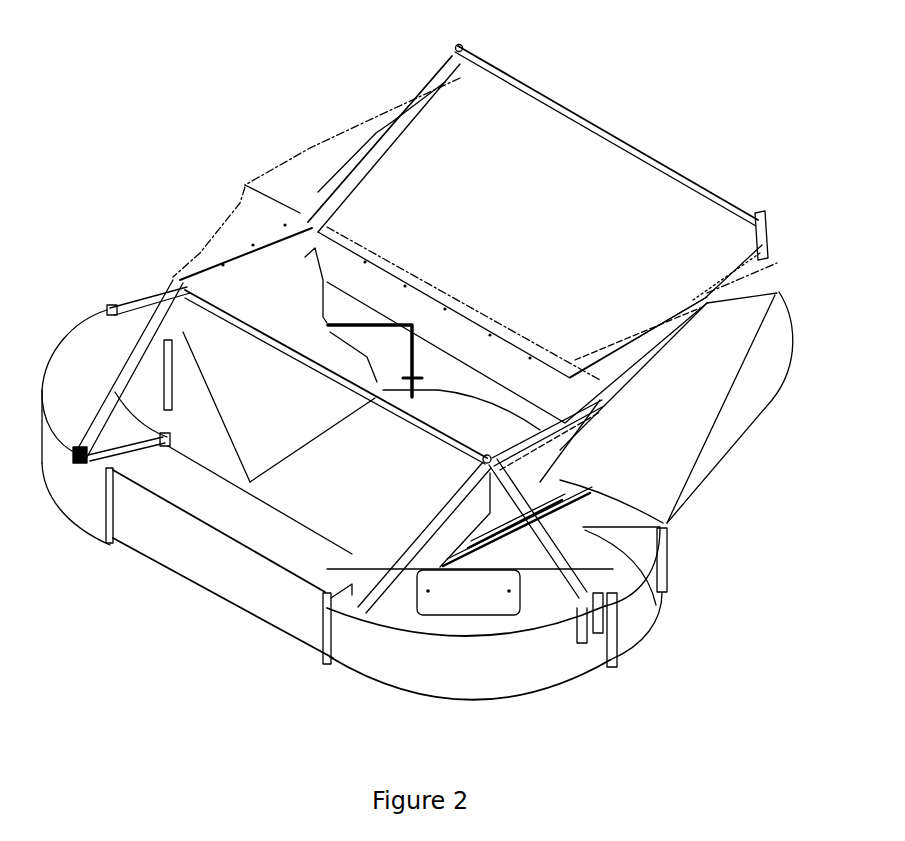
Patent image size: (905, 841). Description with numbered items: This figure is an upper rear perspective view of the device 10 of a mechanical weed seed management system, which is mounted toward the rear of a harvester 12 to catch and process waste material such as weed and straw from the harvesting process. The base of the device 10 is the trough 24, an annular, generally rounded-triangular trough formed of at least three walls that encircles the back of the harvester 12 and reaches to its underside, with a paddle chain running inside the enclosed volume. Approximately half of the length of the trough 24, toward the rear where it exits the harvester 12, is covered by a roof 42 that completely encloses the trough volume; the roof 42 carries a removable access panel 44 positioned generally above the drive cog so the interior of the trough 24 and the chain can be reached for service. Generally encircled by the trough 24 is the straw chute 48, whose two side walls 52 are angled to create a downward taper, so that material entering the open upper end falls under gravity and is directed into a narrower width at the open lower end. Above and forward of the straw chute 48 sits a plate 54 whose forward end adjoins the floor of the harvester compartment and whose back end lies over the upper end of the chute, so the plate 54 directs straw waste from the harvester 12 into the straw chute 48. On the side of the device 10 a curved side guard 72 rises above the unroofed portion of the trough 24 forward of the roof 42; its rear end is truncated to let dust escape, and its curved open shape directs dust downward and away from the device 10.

The device 10 is at (186, 51).
The harvester 12 is at (307, 165).
The trough 24 is at (433, 679).
The roof 42 is at (188, 492).
The access panel 44 is at (503, 597).
The straw chute 48 is at (382, 491).
The side walls 52 is at (274, 418).
The plate 54 is at (547, 217).
The side guards 72 is at (663, 466).